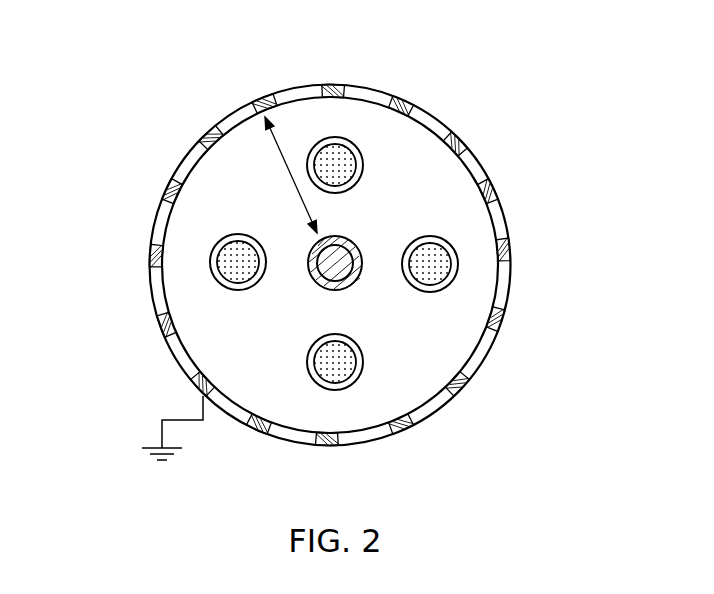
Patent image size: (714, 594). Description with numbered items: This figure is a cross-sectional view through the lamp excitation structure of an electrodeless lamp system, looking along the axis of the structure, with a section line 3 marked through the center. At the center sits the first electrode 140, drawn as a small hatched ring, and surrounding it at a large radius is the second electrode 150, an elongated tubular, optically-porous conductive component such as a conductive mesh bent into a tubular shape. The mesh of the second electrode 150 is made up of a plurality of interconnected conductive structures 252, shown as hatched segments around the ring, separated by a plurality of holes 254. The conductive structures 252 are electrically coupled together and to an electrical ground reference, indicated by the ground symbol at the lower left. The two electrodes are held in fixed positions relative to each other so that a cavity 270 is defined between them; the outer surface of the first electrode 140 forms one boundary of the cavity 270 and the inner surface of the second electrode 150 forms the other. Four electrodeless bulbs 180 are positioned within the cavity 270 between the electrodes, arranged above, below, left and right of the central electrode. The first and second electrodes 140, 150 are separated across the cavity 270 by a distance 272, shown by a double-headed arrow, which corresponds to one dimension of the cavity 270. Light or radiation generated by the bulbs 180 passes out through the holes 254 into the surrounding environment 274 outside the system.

The section line 3- 3 is at (336, 478).
The first electrode 140 is at (351, 241).
The second electrode 150 is at (261, 100).
The electrodeless bulbs 180 is at (352, 146).
The conductive structures 252 is at (149, 245).
The holes 254 is at (138, 213).
The cavity 270 is at (412, 154).
The distance 272 is at (269, 138).
The surrounding environment 274 is at (614, 82).